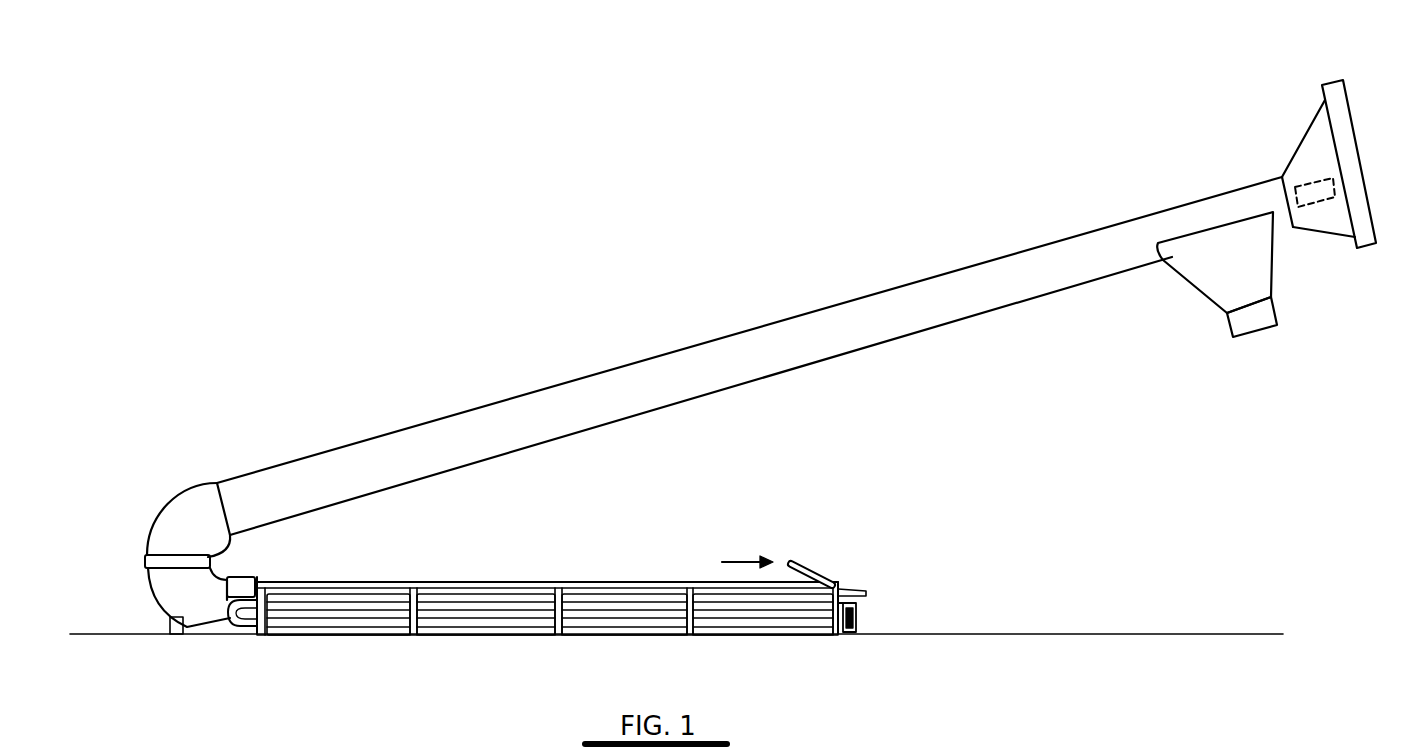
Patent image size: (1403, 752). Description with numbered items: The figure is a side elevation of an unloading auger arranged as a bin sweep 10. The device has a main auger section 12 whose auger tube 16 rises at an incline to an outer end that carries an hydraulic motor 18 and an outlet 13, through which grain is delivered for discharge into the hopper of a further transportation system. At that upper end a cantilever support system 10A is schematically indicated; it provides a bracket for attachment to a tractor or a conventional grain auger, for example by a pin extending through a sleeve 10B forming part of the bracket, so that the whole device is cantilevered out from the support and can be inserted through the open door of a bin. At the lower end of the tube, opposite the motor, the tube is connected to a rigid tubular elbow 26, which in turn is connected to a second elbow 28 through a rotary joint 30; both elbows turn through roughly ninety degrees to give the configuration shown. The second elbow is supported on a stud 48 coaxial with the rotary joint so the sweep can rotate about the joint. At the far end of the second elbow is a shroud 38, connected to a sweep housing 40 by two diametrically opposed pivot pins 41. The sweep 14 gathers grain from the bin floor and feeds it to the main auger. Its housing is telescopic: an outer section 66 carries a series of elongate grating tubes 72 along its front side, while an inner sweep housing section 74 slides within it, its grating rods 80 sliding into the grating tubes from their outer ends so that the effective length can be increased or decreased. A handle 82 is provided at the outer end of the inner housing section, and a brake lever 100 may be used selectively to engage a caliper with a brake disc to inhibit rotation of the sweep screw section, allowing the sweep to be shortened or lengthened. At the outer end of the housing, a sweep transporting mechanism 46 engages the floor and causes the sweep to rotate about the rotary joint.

The bin sweep 10 is at (680, 276).
The cantilever support system 10A is at (1296, 98).
The sleeve 10B is at (1360, 253).
The main auger section 12 is at (982, 255).
The outlet 13 is at (1262, 317).
The sweep 14 is at (550, 552).
The auger tube 16 is at (524, 418).
The hydraulic motor 18 is at (1310, 183).
The rigid tubular elbow 26 is at (190, 492).
The second elbow 28 is at (145, 586).
The rotary joint 30 is at (135, 557).
The shroud 38 is at (246, 574).
The sweep housing 40 is at (493, 580).
The pivot pins 41 is at (235, 602).
The sweep transporting mechanism 46 is at (862, 617).
The stud 48 is at (168, 627).
The outer section 66 is at (630, 582).
The grating tubes 72 is at (378, 630).
The sweep housing section 74 is at (713, 582).
The grating rods 80 is at (775, 603).
The handle 82 is at (866, 592).
The brake lever 100 is at (803, 563).